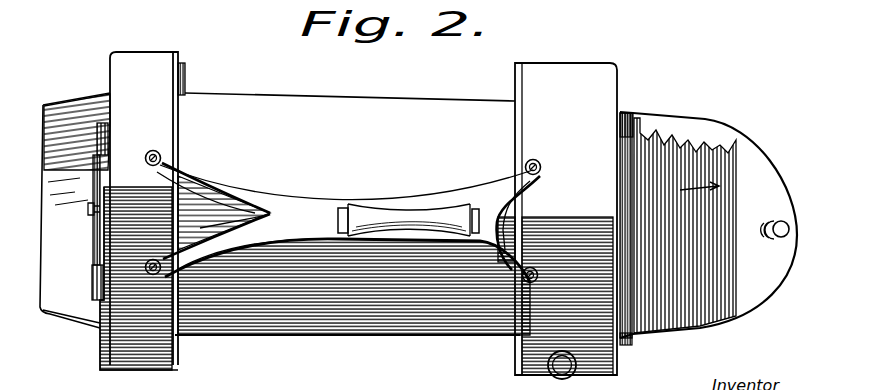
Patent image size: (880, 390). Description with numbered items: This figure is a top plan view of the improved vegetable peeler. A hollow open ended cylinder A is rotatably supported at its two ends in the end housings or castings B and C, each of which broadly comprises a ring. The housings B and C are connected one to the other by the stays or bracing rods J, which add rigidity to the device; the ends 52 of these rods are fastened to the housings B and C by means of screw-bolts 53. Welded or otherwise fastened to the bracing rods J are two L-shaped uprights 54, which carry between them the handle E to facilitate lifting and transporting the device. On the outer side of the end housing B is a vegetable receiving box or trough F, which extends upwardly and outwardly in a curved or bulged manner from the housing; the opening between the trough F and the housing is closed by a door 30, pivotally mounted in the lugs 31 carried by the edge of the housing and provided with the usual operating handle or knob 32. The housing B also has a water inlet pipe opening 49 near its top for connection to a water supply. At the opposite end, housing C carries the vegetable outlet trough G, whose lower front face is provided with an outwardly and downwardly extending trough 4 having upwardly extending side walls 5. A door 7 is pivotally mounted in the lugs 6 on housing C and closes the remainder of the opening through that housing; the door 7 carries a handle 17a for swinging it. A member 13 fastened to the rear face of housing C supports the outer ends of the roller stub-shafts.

The trough 4 is at (97, 262).
The side walls 5 is at (57, 106).
The lugs 6 is at (101, 126).
The door 7 is at (81, 290).
The member 13 is at (266, 214).
The pin 17a is at (92, 214).
The door 30 is at (678, 225).
The lugs 31 is at (633, 114).
The operating handle or knob 32 is at (775, 222).
The water inlet pipe opening 49 is at (507, 363).
The ends 52 is at (183, 228).
The screw-bolts 53 is at (162, 156).
The L-shaped uprights 54 is at (342, 213).
The hollow open ended cylinder A is at (350, 114).
The housing B is at (566, 219).
The housing C is at (147, 208).
The handle E is at (390, 197).
The trough or bin F is at (708, 225).
The vegetable outlet trough G is at (75, 210).
The stays or bracing rods J is at (346, 223).